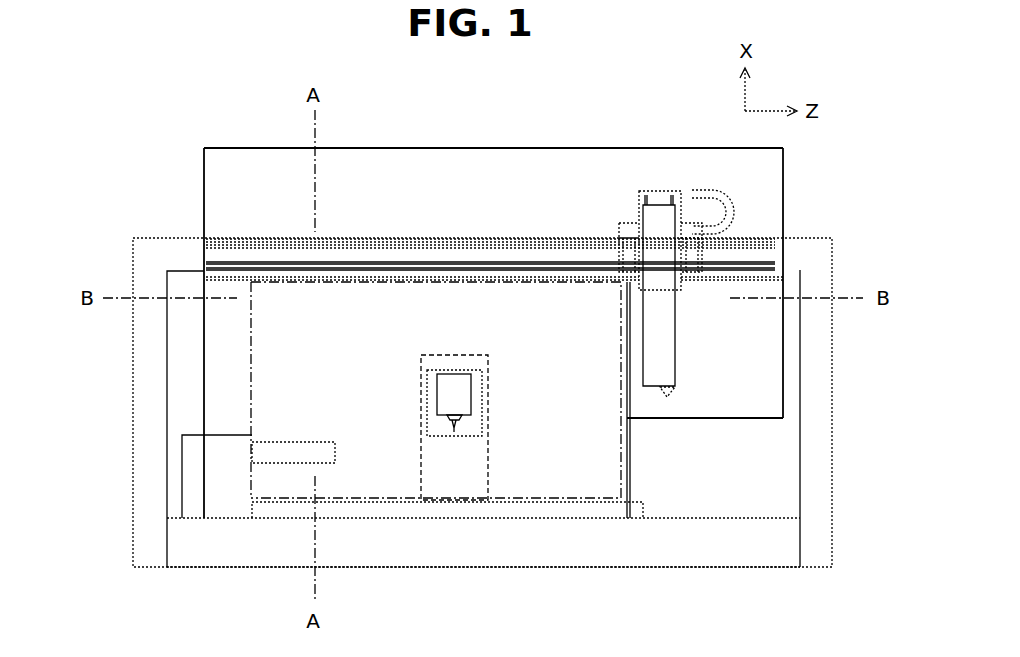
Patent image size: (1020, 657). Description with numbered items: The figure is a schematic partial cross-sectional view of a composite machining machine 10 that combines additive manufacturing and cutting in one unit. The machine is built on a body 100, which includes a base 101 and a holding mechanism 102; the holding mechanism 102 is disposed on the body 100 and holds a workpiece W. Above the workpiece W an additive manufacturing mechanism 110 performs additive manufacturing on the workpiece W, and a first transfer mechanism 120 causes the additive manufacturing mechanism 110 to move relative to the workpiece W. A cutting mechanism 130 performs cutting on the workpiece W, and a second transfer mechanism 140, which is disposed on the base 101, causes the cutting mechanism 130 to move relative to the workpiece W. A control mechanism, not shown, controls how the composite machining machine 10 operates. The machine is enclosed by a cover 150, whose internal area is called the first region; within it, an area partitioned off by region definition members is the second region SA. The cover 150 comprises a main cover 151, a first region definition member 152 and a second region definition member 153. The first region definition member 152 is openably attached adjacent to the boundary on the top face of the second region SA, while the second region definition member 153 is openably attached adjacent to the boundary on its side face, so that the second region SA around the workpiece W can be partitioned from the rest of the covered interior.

The composite machining machine 10 is at (252, 127).
The body 100 is at (278, 578).
The base 101 is at (625, 548).
The holding mechanism 102 is at (223, 487).
The additive manufacturing mechanism 110 is at (668, 400).
The first transfer mechanism 120 is at (162, 220).
The cutting mechanism 130 is at (455, 363).
The second transfer mechanism 140 is at (472, 465).
The cover 150 is at (467, 330).
The main cover 151 is at (783, 177).
The first region definition member 152 is at (376, 282).
The second region definition member 153 is at (622, 333).
The workpiece W is at (325, 450).
The second region SA is at (250, 392).